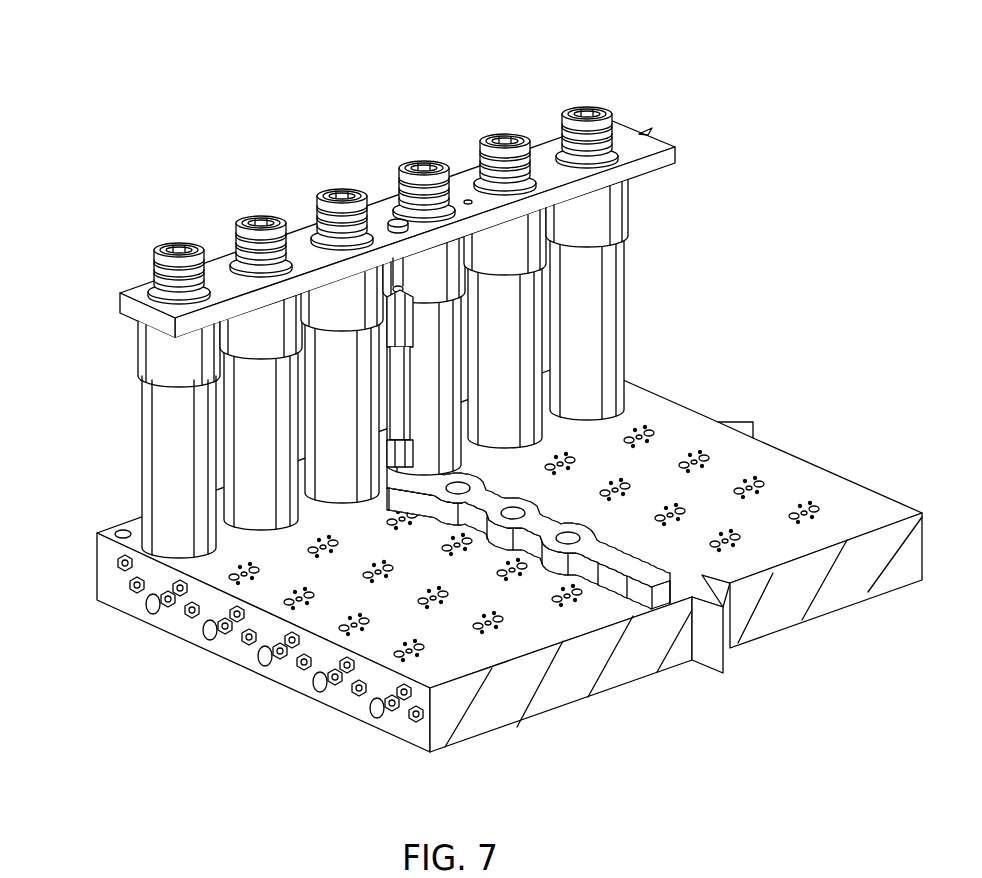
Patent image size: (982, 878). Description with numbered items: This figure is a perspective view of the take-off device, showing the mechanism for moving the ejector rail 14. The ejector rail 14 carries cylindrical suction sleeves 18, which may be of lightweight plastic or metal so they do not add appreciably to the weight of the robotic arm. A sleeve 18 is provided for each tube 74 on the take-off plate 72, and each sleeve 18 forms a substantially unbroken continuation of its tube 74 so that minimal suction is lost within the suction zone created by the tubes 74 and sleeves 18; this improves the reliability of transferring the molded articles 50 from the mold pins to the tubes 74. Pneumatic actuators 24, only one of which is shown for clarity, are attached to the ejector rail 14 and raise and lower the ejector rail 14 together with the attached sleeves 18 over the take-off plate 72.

The ejector rail 14 is at (120, 296).
The suction sleeve 18 is at (143, 353).
The pneumatic actuator 24 is at (398, 417).
The molded article 50 is at (183, 243).
The take-off plate 72 is at (103, 563).
The tube 74 is at (190, 463).